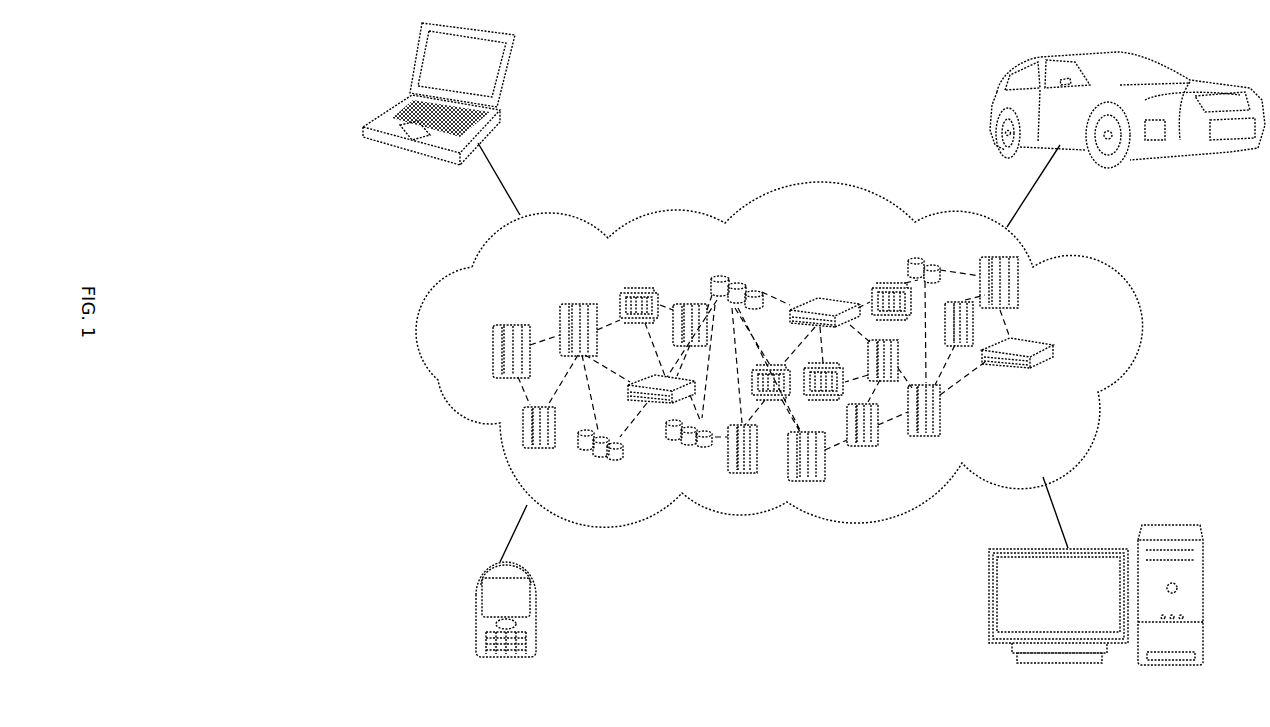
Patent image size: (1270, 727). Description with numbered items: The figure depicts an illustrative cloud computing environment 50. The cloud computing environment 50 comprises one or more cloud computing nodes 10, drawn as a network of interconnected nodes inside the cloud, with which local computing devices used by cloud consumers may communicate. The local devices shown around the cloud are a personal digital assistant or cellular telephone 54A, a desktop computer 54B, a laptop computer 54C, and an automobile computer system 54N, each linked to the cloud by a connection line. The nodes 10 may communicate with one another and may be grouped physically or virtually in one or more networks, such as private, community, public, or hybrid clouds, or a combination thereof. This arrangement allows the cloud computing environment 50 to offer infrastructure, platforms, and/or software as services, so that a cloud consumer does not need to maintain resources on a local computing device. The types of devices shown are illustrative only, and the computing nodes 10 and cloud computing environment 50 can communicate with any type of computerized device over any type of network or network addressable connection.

The cloud computing nodes 10 is at (1085, 350).
The cloud computing environment 50 is at (1110, 276).
The personal digital assistant (PDA) or cellular telephone 54A is at (476, 613).
The desktop computer 54B is at (1173, 523).
The laptop computer 54C is at (512, 82).
The automobile computer system 54N is at (998, 90).